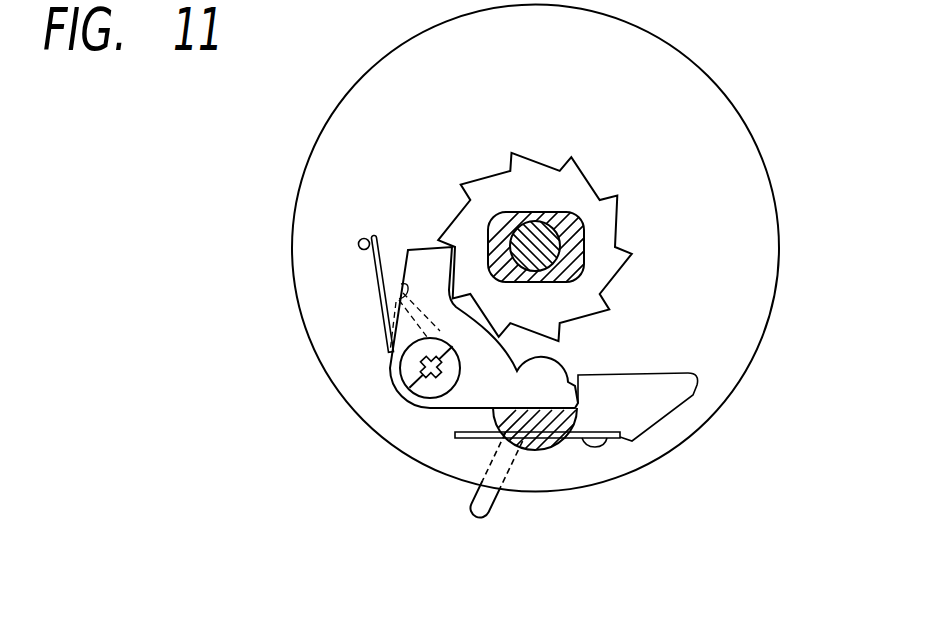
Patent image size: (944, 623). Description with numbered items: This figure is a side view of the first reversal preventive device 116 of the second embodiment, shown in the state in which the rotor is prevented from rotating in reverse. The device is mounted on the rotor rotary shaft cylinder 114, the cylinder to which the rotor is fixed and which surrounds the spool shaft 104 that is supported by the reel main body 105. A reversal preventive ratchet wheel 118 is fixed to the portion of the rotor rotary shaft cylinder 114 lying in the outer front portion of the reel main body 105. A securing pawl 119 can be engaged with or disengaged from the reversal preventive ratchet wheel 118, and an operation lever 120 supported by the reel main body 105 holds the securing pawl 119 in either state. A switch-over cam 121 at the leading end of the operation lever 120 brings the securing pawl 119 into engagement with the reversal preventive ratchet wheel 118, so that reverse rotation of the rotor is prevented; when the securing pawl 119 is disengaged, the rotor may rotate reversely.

The spool shaft 104 is at (522, 230).
The reel main body 105 is at (728, 100).
The rotor rotary shaft cylinder 114 is at (578, 222).
The first reversal preventive device 116 is at (360, 338).
The reversal preventive ratchet wheel 118 is at (620, 257).
The securing pawl 119 is at (422, 268).
The operation lever 120 is at (488, 505).
The switch-over cam 121 is at (550, 452).